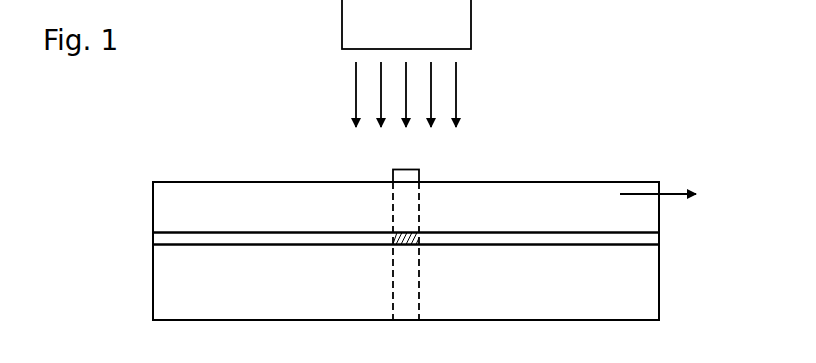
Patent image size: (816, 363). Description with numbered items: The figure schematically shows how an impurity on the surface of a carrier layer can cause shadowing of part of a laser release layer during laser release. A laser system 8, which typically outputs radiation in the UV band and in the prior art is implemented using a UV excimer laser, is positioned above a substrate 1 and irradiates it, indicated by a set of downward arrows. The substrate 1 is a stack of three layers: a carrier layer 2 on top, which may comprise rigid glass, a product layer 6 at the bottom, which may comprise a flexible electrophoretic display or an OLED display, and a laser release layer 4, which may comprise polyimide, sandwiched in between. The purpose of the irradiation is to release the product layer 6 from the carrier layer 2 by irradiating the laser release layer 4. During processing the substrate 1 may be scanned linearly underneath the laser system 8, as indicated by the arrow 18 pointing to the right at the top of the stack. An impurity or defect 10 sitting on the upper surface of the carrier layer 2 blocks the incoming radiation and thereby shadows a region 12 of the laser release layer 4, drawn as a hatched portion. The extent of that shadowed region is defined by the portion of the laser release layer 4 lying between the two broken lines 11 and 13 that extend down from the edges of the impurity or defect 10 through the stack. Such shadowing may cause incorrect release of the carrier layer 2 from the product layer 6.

The substrate 1 is at (627, 58).
The carrier layer 2 is at (162, 209).
The laser release layer 4 is at (290, 239).
The product layer 6 is at (168, 282).
The laser system 8 is at (398, 30).
The impurity or defect 10 is at (406, 171).
The broken line 11 is at (392, 253).
The region 12 is at (404, 233).
The broken line 13 is at (419, 255).
The arrow 18 is at (668, 193).